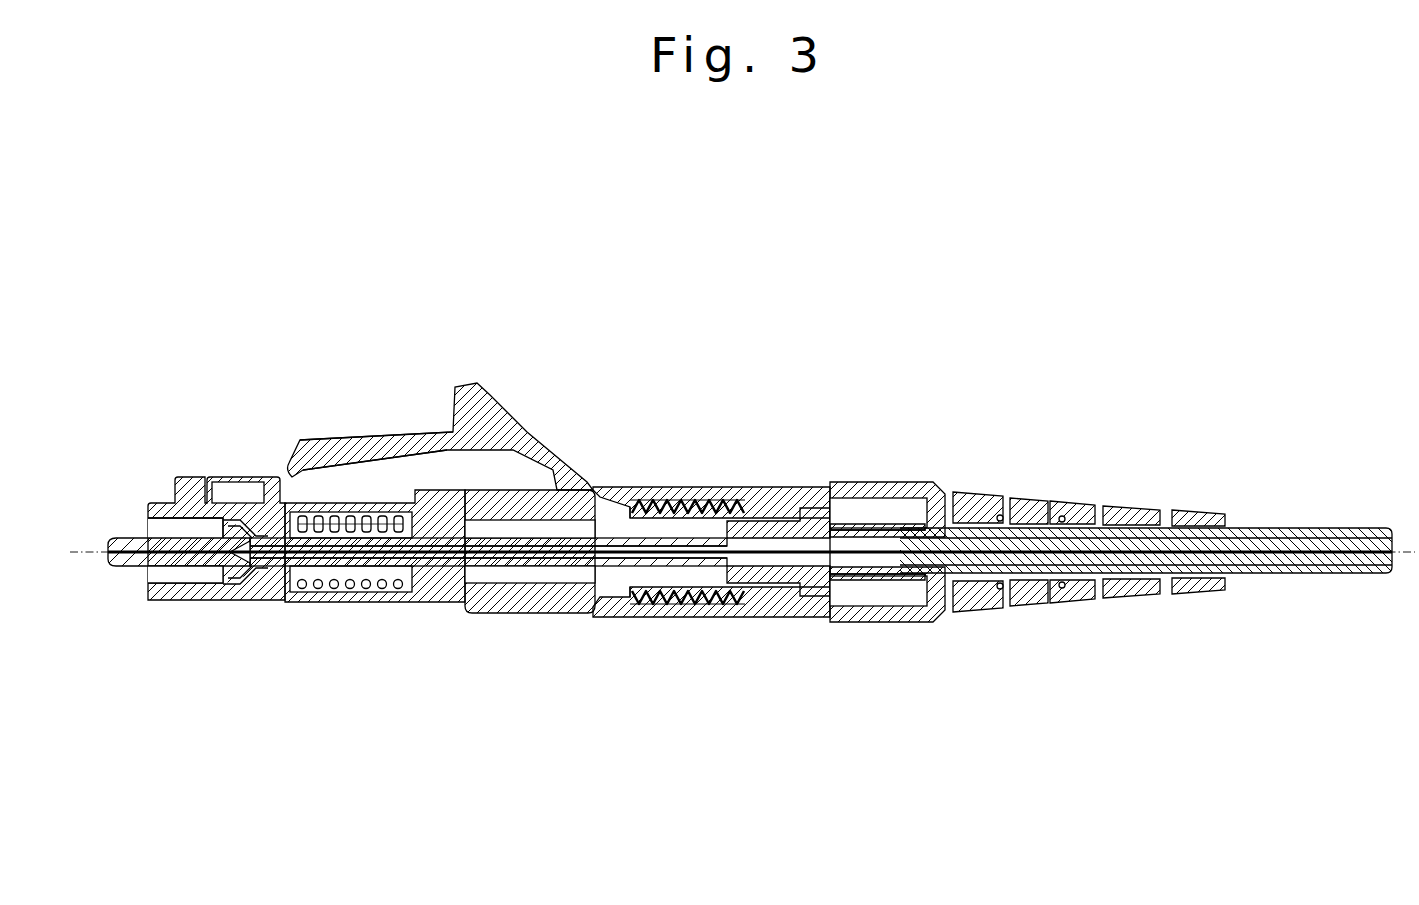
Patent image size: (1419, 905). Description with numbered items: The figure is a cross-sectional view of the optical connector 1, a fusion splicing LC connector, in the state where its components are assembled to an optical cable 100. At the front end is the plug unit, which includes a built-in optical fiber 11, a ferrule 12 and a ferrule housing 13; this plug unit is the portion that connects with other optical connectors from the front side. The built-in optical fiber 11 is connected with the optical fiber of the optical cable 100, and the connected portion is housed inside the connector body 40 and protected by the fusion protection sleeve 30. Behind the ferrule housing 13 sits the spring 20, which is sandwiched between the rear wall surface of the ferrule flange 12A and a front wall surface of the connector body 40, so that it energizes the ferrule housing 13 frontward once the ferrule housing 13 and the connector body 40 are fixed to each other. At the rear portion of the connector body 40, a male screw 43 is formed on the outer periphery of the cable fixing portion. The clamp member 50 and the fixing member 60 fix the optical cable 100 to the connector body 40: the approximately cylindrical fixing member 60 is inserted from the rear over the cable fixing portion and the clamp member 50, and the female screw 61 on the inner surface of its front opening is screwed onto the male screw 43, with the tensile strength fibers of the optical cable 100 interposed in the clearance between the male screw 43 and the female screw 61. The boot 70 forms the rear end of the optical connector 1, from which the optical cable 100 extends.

The optical connector 1 is at (160, 322).
The built-in optical fiber 11 is at (145, 532).
The ferrule 12 is at (122, 568).
The ferrule flange 12A is at (256, 580).
The ferrule housing 13 is at (170, 597).
The spring 20 is at (372, 585).
The fusion protection sleeve 30 is at (460, 602).
The connector body 40 is at (553, 605).
The male screw 43 is at (650, 488).
The clamp member 50 is at (806, 598).
The fixing member 60 is at (688, 605).
The female screw 61 is at (685, 488).
The boot 70 is at (902, 615).
The optical cable 100 is at (1313, 530).